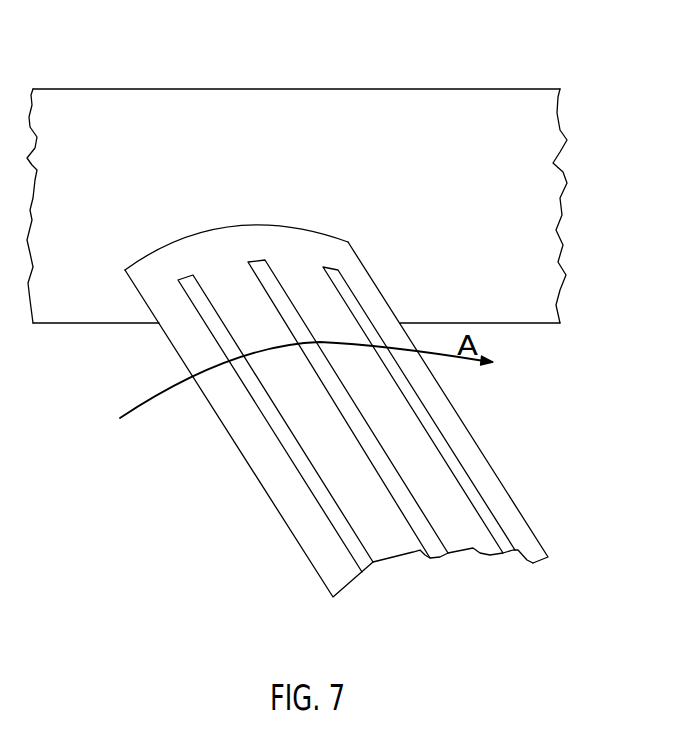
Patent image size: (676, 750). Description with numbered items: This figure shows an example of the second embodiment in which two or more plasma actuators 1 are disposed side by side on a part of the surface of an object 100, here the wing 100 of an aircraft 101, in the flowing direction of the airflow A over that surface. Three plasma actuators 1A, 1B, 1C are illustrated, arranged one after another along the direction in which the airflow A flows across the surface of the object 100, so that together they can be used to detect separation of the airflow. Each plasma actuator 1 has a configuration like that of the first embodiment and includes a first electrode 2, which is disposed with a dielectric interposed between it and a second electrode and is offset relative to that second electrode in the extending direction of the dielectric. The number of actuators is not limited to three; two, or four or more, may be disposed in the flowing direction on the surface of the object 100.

The aircraft 101 is at (412, 87).
The object 100 is at (365, 434).
The plasma actuator 1 is at (391, 452).
The plasma actuator 1A is at (348, 528).
The plasma actuator 1B is at (428, 547).
The plasma actuator 1C is at (467, 482).
The first electrode 2 is at (508, 531).